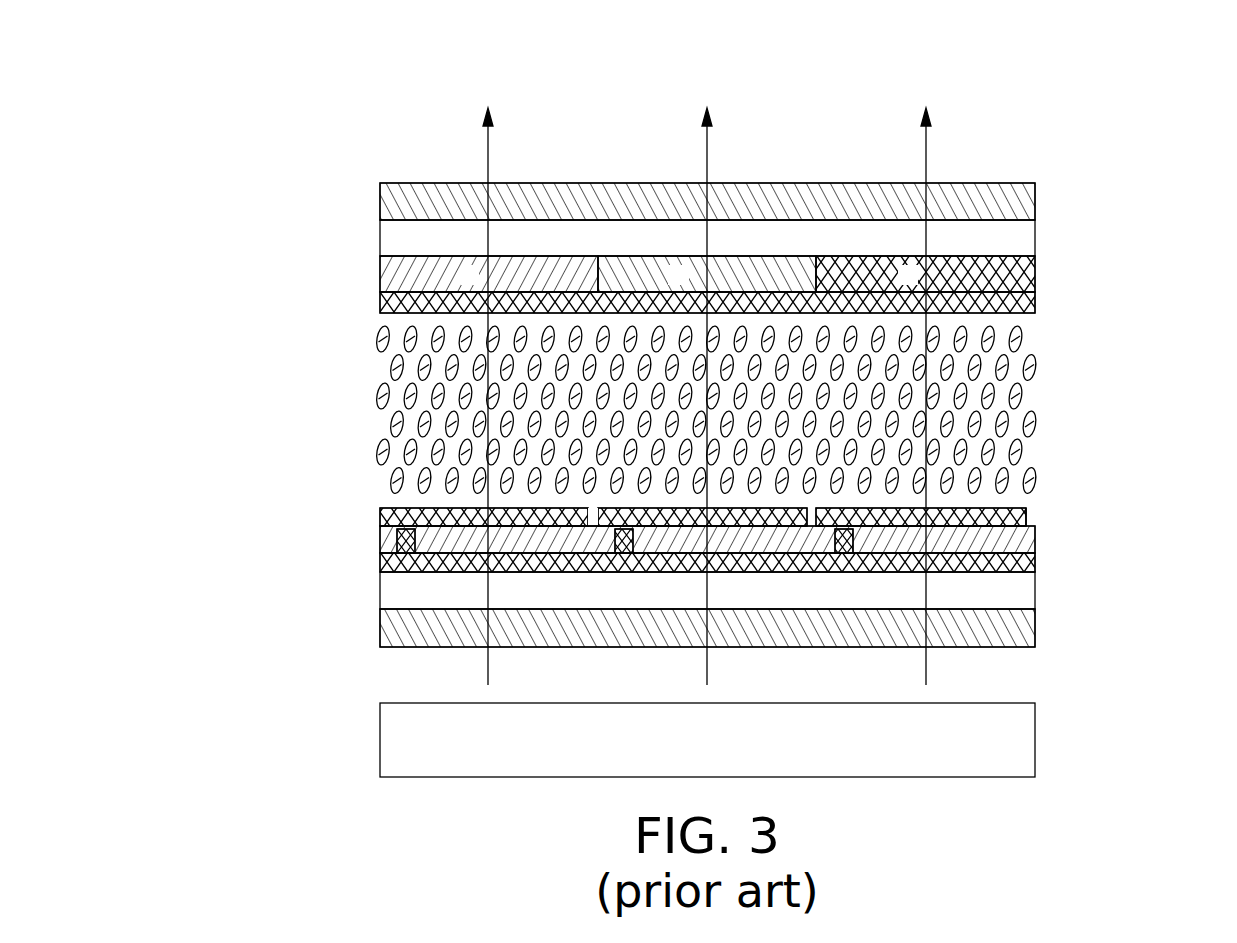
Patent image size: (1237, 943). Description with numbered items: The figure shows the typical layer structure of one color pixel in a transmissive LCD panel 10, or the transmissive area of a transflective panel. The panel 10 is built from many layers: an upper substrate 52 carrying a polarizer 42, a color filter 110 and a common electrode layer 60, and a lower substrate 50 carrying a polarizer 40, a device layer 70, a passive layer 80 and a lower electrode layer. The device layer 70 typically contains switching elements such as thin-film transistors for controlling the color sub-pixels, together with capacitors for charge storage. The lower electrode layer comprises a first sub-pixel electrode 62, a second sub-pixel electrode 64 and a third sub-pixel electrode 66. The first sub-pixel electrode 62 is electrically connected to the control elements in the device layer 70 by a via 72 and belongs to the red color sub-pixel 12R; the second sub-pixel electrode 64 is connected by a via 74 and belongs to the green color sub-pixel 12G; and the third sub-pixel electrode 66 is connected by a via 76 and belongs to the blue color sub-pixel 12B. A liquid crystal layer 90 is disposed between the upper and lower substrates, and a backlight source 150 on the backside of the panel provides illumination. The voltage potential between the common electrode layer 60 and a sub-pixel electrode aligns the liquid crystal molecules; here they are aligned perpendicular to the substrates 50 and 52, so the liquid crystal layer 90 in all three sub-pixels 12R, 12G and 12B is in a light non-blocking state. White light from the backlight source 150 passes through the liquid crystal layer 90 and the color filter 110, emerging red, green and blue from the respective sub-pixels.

The LCD panel 10 is at (1150, 122).
The color sub-pixel 12R is at (512, 156).
The color sub-pixel 12G is at (739, 156).
The color sub-pixel 12B is at (949, 154).
The polarizer 40 is at (380, 630).
The polarizer 42 is at (1035, 205).
The lower substrate 50 is at (1035, 590).
The upper substrate 52 is at (380, 240).
The common electrode layer 60 is at (380, 303).
The first sub-pixel electrode 62 is at (380, 516).
The second sub-pixel electrode 64 is at (597, 522).
The third sub-pixel electrode 66 is at (1027, 518).
The device layer 70 is at (382, 561).
The via 72 is at (397, 533).
The via 74 is at (612, 553).
The via 76 is at (963, 624).
The passive layer 80 is at (1035, 542).
The liquid crystal layer 90 is at (342, 406).
The color filter 110 is at (1035, 273).
The backlight source 150 is at (380, 735).